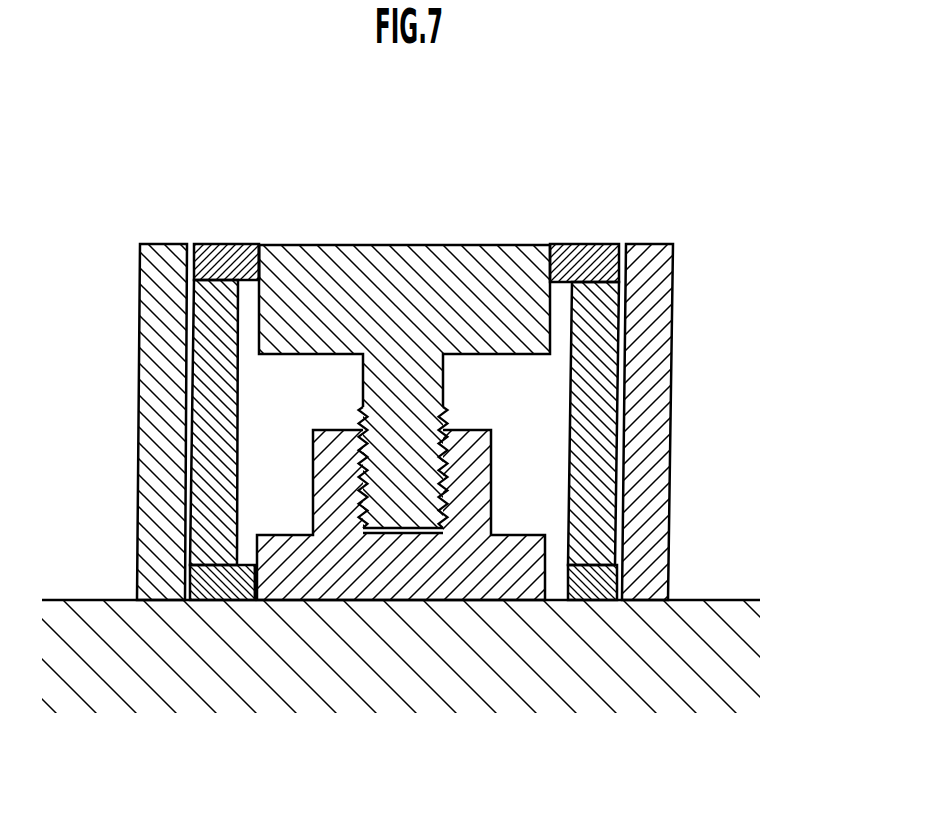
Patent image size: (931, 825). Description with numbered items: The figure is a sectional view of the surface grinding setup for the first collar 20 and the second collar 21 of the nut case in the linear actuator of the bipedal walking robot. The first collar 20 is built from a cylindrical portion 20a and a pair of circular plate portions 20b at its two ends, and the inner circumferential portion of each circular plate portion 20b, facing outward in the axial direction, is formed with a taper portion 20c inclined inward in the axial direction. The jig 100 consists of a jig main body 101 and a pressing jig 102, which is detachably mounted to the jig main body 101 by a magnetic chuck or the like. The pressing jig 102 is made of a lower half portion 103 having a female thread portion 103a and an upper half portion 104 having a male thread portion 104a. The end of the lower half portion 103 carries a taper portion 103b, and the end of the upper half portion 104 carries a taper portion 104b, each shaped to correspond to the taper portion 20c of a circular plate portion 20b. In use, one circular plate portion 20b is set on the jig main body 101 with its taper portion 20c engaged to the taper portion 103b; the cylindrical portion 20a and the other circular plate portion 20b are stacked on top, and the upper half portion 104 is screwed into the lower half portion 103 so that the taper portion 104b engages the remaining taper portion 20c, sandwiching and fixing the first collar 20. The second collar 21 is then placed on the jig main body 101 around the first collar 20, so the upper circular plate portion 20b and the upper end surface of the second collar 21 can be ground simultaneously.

The jig 100 is at (722, 576).
The jig main body 101 is at (743, 665).
The pressing jig 102 is at (551, 460).
The lower half portion 103 is at (333, 600).
The female thread portion 103a is at (444, 500).
The taper portion 103b is at (633, 512).
The upper half portion 104 is at (470, 270).
The male thread portion 104a is at (360, 457).
The taper portion 104b is at (558, 255).
The first collar 20 is at (627, 412).
The cylindrical portion 20a is at (192, 417).
The circular plate portion 20b is at (193, 270).
The taper portion 20c is at (261, 245).
The second collar 21 is at (672, 355).